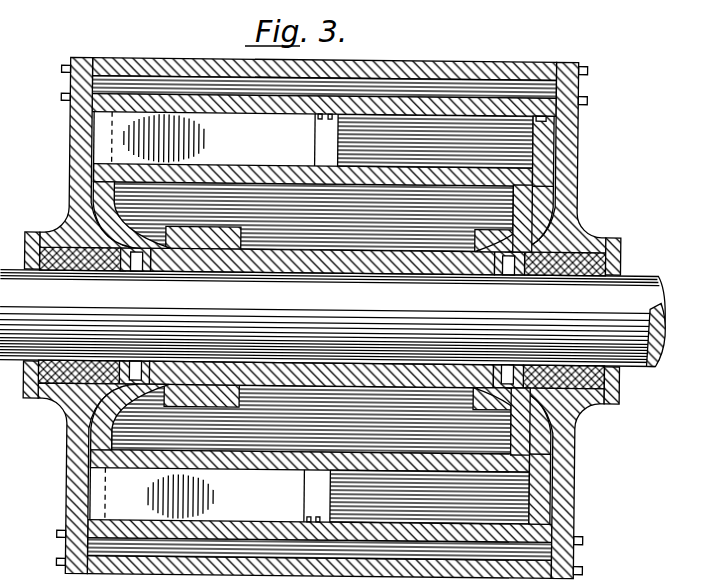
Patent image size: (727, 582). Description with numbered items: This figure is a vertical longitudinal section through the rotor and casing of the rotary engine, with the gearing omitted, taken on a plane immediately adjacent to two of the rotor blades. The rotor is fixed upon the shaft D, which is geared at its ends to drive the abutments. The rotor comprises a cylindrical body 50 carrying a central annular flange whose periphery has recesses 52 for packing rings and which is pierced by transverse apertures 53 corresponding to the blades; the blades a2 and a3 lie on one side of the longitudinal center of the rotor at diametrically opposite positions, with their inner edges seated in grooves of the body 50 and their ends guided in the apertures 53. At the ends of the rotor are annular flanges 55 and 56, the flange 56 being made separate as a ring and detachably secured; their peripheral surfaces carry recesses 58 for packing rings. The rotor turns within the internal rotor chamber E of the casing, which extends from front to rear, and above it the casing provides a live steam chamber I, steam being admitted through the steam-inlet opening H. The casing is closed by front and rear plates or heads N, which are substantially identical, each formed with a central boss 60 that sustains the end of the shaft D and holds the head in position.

The live steam chamber I is at (503, 74).
The internal rotor chamber E is at (138, 109).
The front and rear plates or heads N is at (577, 160).
The steam-inlet opening H is at (560, 188).
The shaft D is at (636, 265).
The central boss 60 is at (57, 238).
The recesses 58 is at (540, 117).
The annular flange 56 is at (97, 500).
The annular flange 55 is at (552, 518).
The transverse apertures 53 is at (322, 150).
The peripheral recesses 52 is at (322, 513).
The cylindrical body 50 is at (163, 470).
The blade a2 is at (195, 138).
The blade a3 is at (219, 497).